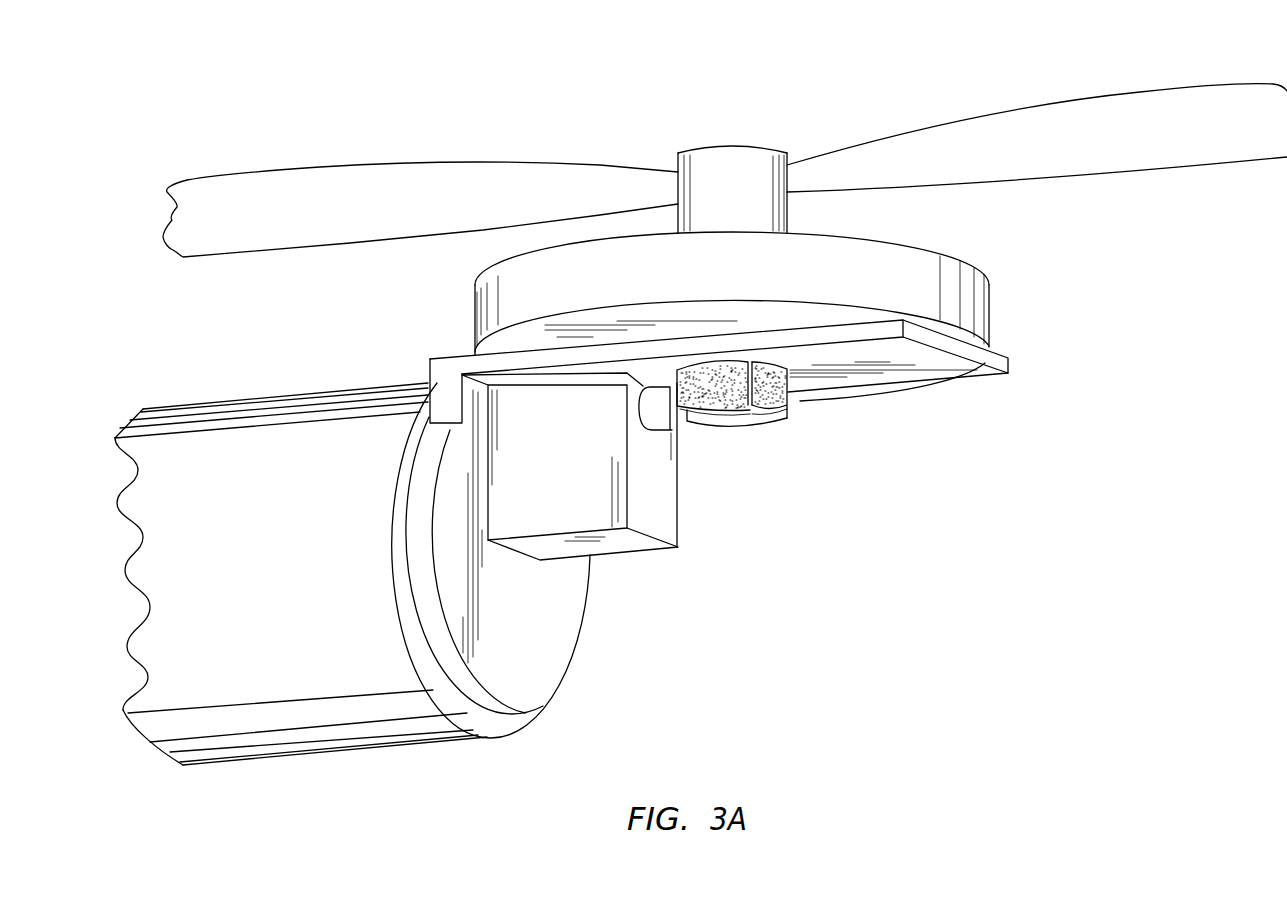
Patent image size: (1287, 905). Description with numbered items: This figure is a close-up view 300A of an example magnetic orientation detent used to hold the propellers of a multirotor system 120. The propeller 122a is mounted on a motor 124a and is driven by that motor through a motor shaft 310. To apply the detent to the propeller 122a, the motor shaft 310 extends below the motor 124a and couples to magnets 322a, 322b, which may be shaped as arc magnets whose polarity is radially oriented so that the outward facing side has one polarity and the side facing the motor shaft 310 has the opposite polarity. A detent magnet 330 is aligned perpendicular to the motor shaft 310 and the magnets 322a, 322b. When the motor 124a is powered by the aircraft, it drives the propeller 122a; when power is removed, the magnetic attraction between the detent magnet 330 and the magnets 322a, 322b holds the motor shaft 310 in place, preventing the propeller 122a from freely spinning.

The close-up view 300A is at (701, 445).
The multirotor system 120 is at (282, 755).
The propeller 122a is at (288, 251).
The motor 124a is at (990, 310).
The motor shaft 310 is at (757, 423).
The magnet 322a is at (720, 393).
The magnet 322b is at (775, 395).
The detent magnet 330 is at (657, 424).